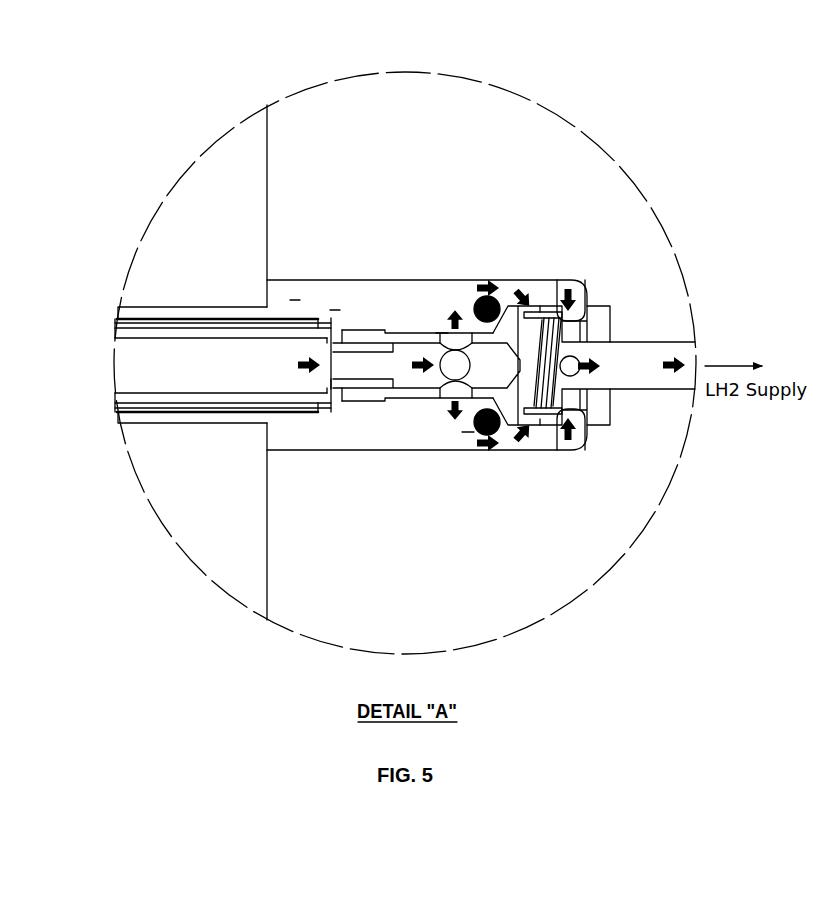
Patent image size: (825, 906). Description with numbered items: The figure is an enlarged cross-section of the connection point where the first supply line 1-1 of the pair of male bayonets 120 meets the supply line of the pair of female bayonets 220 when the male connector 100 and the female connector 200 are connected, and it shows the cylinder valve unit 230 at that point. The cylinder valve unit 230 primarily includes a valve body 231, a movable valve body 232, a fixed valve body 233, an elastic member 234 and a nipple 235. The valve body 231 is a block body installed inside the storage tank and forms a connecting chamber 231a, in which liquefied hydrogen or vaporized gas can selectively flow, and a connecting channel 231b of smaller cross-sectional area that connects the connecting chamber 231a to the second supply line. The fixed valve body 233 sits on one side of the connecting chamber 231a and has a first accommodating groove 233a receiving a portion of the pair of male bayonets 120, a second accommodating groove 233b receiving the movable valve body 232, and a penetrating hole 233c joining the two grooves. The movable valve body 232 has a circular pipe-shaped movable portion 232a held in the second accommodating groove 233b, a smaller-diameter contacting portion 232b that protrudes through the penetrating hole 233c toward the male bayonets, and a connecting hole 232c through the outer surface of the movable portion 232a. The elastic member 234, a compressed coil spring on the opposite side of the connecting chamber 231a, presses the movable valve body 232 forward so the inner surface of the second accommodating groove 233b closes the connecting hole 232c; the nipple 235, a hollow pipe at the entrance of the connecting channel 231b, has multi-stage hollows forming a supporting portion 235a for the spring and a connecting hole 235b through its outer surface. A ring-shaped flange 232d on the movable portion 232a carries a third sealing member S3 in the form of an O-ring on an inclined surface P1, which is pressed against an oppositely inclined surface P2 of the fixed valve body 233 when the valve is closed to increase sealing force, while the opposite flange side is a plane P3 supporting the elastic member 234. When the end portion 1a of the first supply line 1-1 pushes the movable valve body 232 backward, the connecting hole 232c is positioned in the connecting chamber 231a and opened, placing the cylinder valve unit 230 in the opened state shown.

The first supply line 1-1 is at (122, 335).
The end portion of the first supply line 1a is at (330, 385).
The male connector 100 is at (226, 233).
The pair of male bayonets 120 is at (210, 319).
The female connector 200 is at (164, 230).
The pair of female bayonets 220 is at (178, 307).
The cylinder valve unit 230 is at (398, 94).
The valve body 231 is at (381, 121).
The connecting chamber 231a is at (505, 280).
The connecting channel 231b is at (637, 342).
The movable valve body 232 is at (383, 520).
The movable portion 232a is at (417, 397).
The contacting portion 232b is at (353, 388).
The connecting hole 232c is at (443, 400).
The flange 232d is at (512, 440).
The fixed valve body 233 is at (317, 297).
The first accommodating groove 233a is at (298, 316).
The second accommodating groove 233b is at (443, 330).
The penetrating hole 233c is at (333, 316).
The elastic member 234 is at (545, 432).
The nipple 235 is at (603, 305).
The supporting portion 235a is at (588, 306).
The connecting hole 235b is at (580, 452).
The inclined surface P1 is at (499, 440).
The inclined surface P2 is at (440, 300).
The plane P3 is at (548, 300).
The third sealing member S3 is at (466, 440).